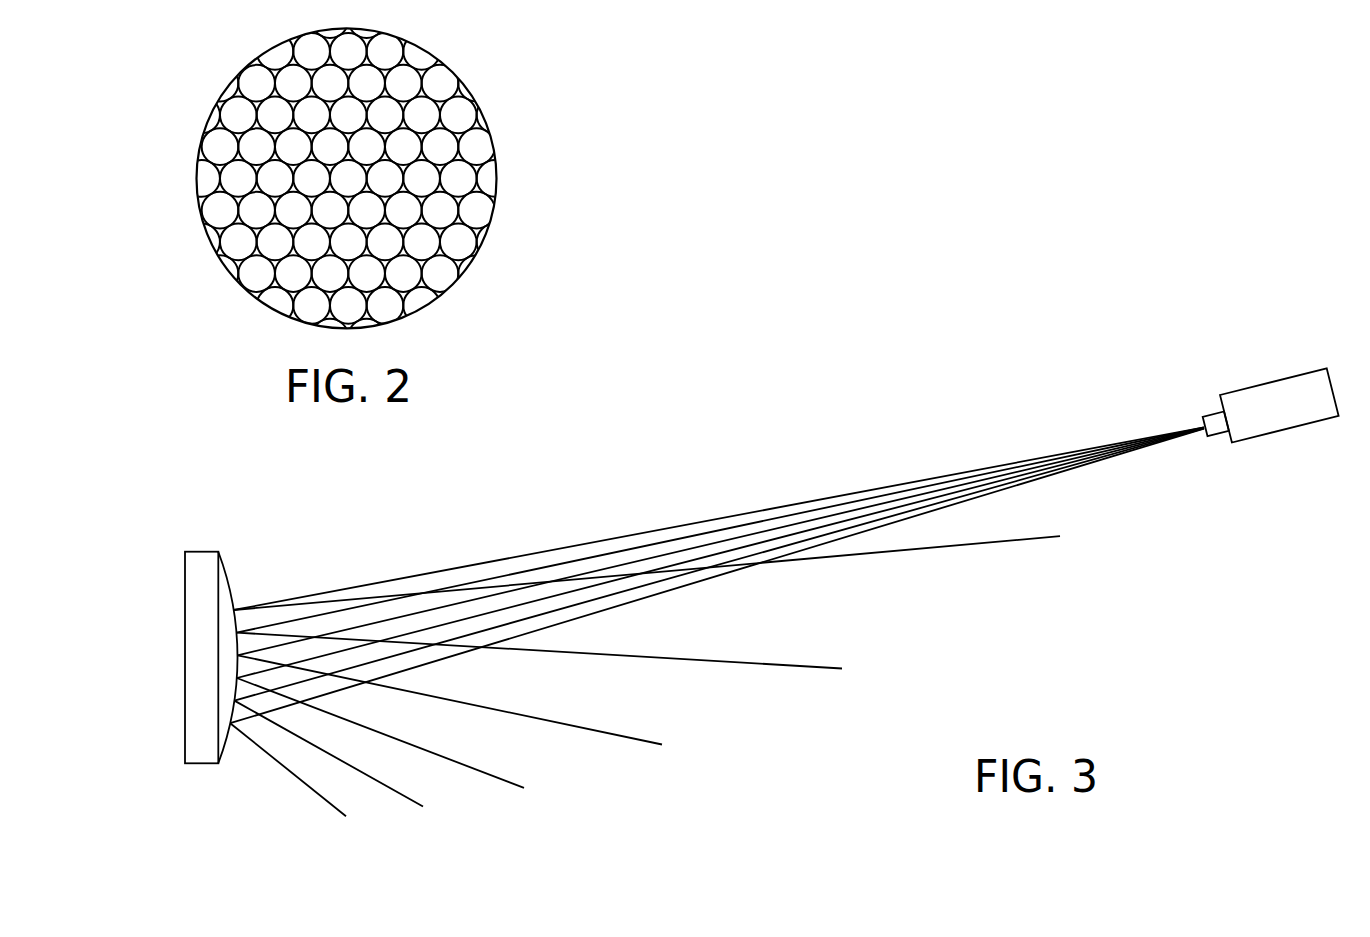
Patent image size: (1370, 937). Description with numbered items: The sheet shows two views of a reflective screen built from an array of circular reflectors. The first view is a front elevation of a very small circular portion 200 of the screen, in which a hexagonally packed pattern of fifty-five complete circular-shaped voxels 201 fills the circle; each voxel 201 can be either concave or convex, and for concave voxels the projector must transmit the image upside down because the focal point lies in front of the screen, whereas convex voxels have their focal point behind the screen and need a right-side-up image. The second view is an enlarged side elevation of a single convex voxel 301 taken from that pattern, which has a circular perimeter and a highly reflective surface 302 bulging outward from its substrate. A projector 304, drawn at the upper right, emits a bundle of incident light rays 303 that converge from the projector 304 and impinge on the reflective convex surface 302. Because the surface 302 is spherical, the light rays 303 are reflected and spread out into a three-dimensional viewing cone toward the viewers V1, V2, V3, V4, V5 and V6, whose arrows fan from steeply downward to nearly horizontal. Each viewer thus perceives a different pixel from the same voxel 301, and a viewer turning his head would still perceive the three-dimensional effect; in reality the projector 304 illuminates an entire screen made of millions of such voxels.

In FIG. 2, the portion of a screen 200 is at (366, 178).
In FIG. 2, the circular-shaped voxel 201 is at (477, 208).
In FIG. 3, the convex voxel 301 is at (202, 745).
In FIG. 3, the reflective surface 302 is at (236, 571).
In FIG. 3, the light rays 303 is at (878, 475).
In FIG. 3, the projector 304 is at (1270, 397).
In FIG. 3, the viewer V1 is at (306, 787).
In FIG. 3, the viewer V2 is at (347, 770).
In FIG. 3, the viewer V3 is at (402, 743).
In FIG. 3, the viewer V4 is at (472, 708).
In FIG. 3, the viewer V5 is at (561, 657).
In FIG. 3, the viewer V6 is at (667, 567).